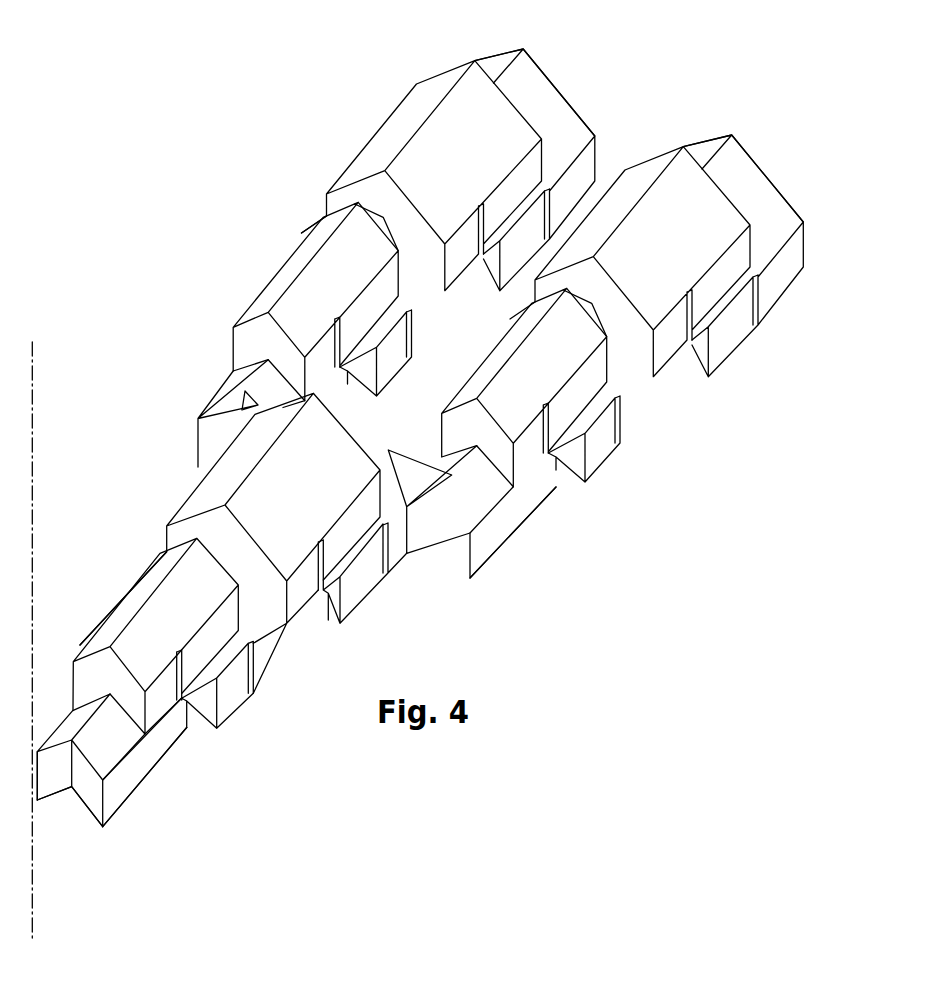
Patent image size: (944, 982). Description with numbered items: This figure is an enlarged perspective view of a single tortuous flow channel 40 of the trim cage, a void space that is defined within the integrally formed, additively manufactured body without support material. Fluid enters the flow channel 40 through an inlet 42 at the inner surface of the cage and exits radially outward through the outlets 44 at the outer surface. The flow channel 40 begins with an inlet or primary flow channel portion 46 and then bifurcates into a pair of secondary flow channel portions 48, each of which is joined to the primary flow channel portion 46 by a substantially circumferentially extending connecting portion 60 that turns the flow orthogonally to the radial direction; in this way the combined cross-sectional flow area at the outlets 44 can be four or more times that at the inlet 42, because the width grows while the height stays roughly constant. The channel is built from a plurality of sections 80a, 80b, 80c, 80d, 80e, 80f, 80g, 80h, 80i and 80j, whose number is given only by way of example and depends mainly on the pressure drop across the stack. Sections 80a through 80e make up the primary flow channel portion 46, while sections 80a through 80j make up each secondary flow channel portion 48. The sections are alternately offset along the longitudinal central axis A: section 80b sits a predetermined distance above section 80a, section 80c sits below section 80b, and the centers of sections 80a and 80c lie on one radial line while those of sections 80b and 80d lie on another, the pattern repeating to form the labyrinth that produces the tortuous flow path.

The flow channel 40 is at (200, 333).
The inlet 42 is at (82, 803).
The outlet 44 is at (540, 67).
The primary flow channel portion 46 is at (146, 566).
The secondary flow channel portion 48 is at (305, 236).
The connecting portion 60 is at (237, 422).
The longitudinal central axis A is at (32, 415).
The section 80a is at (68, 730).
The section 80b is at (125, 613).
The section 80c is at (230, 700).
The section 80d is at (225, 484).
The section 80e is at (357, 587).
The section 80f is at (225, 400).
The section 80g is at (272, 300).
The section 80h is at (415, 270).
The section 80i is at (390, 138).
The section 80j is at (495, 67).